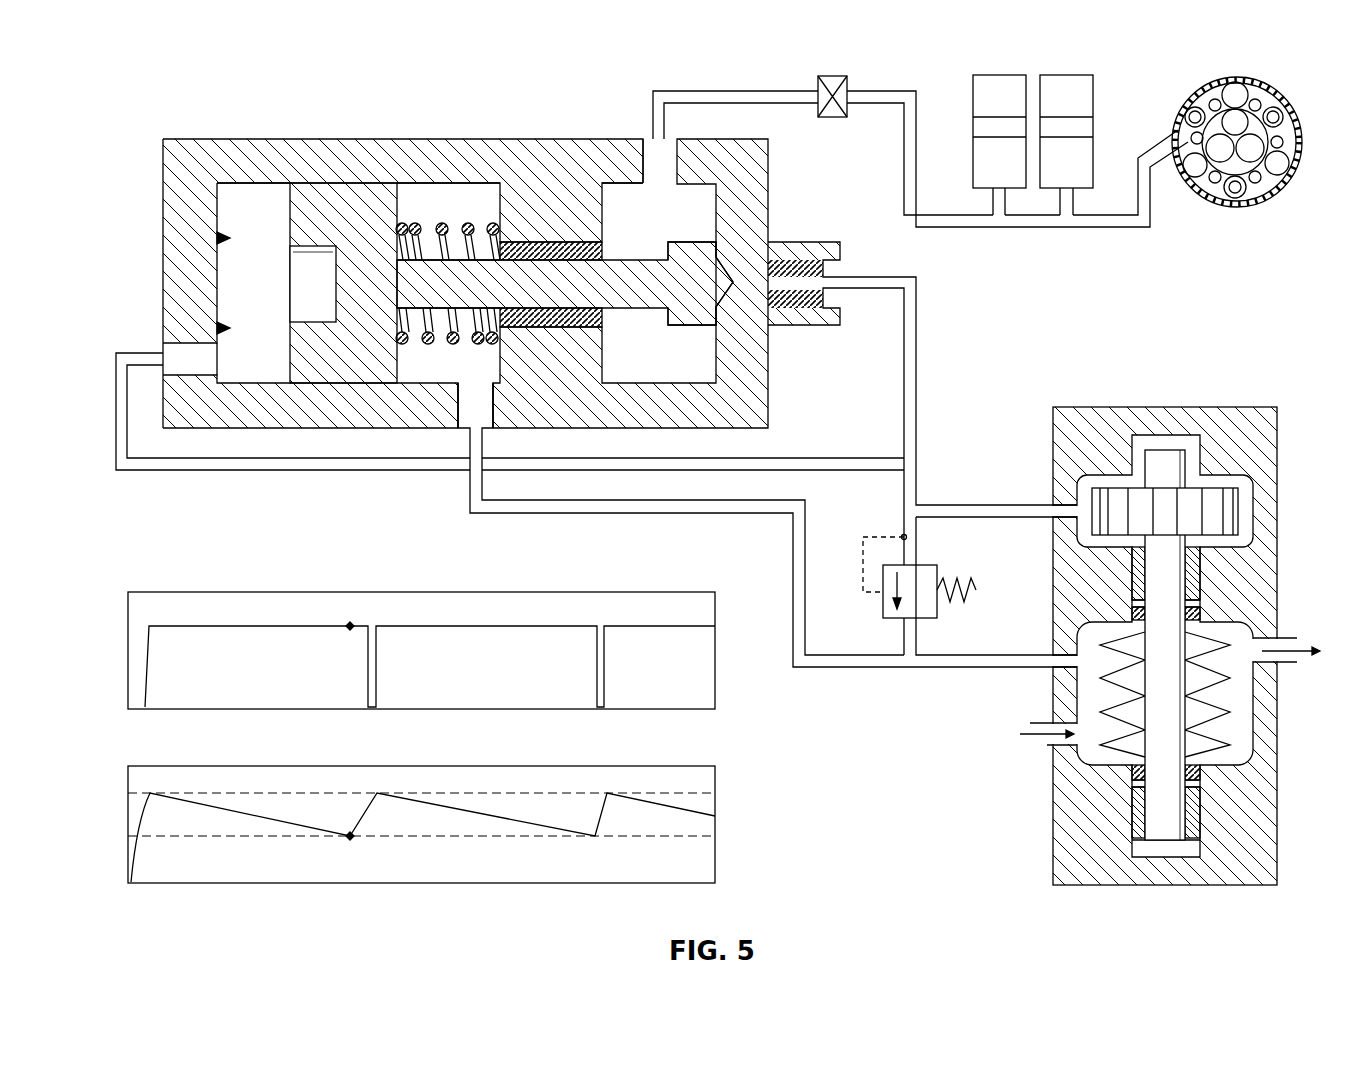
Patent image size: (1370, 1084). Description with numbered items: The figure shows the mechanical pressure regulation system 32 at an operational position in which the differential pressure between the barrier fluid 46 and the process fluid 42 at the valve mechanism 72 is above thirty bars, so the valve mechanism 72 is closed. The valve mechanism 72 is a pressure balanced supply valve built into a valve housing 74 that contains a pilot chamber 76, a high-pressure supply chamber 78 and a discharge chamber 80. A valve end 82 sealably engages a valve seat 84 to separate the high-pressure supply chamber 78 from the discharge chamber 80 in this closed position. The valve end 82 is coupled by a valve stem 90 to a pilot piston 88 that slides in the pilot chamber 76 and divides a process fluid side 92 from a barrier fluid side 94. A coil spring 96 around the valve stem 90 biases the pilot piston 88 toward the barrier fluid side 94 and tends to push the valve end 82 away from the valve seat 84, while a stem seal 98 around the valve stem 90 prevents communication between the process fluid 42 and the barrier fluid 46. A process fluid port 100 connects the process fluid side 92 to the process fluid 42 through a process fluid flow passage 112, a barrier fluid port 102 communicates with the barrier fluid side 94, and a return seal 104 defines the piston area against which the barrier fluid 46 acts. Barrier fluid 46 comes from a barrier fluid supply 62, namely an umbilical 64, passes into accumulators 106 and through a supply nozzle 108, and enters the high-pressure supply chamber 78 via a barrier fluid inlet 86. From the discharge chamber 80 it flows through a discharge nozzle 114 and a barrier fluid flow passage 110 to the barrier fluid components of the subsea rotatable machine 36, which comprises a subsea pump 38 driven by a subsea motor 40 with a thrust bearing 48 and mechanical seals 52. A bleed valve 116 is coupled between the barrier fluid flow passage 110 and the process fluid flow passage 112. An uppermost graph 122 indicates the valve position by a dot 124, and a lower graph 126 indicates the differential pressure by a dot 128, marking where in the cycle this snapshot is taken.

The mechanical pressure regulation system 32 is at (1241, 286).
The subsea rotatable machine 36 is at (1110, 395).
The subsea pump 38 is at (1258, 716).
The subsea motor 40 is at (1228, 473).
The process fluid 42 is at (420, 369).
The barrier fluid 46 is at (233, 210).
The thrust bearing 48 is at (1138, 812).
The mechanical seals 52 is at (1203, 612).
The barrier fluid supply 62 is at (1172, 92).
The umbilical 64 is at (1265, 85).
The valve mechanism 72 is at (292, 128).
The valve housing 74 is at (585, 165).
The pilot chamber 76 is at (422, 186).
The high-pressure supply chamber 78 is at (693, 370).
The discharge chamber 80 is at (750, 300).
The valve end 82 is at (722, 292).
The valve seat 84 is at (712, 252).
The barrier fluid inlet 86 is at (635, 158).
The pilot piston 88 is at (352, 200).
The valve stem 90 is at (538, 294).
The process fluid side 92 is at (443, 180).
The barrier fluid side 94 is at (243, 180).
The spring 96 is at (478, 222).
The seal 98 is at (555, 243).
The process fluid port 100 is at (455, 415).
The barrier fluid port 102 is at (177, 342).
The return seal 104 is at (222, 325).
The accumulators 106 is at (1055, 80).
The supply nozzle 108 is at (830, 76).
The barrier fluid flow passage 110 is at (904, 488).
The process fluid flow passage 112 is at (738, 513).
The discharge nozzle 114 is at (800, 243).
The bleed valve 116 is at (940, 556).
The uppermost graph 122 is at (272, 592).
The dot 124 is at (350, 630).
The lower graph 126 is at (538, 766).
The dot 128 is at (350, 840).